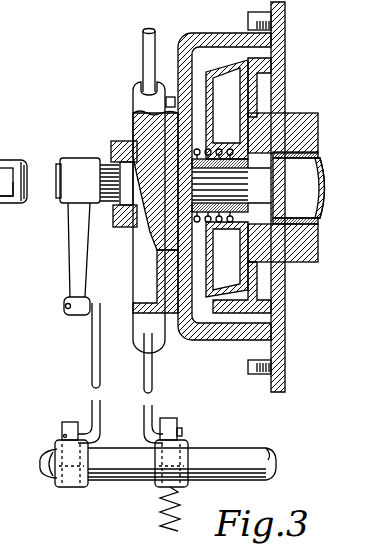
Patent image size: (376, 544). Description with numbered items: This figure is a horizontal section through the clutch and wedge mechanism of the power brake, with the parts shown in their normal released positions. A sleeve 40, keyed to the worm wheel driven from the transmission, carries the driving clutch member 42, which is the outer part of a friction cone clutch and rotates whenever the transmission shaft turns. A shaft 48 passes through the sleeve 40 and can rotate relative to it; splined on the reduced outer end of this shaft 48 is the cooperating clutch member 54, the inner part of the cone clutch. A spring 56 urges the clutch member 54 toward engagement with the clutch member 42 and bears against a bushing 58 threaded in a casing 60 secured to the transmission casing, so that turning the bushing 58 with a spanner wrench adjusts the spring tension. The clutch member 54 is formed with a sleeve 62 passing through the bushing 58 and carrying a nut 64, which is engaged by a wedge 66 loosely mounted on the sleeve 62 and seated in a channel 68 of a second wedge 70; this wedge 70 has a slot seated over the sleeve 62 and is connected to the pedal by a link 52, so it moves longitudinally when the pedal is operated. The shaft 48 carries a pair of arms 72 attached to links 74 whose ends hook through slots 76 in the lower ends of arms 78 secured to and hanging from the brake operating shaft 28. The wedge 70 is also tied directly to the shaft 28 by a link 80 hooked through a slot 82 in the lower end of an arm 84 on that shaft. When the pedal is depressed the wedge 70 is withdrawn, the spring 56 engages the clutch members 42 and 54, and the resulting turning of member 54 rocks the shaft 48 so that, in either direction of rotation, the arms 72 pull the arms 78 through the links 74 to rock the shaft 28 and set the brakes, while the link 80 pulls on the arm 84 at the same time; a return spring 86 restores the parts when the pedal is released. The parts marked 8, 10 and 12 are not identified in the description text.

The support member 8 is at (13, 162).
The housing 10 is at (290, 304).
The shaft 12 is at (6, 200).
The brake operating shaft 28 is at (132, 467).
The sleeve 40 is at (305, 262).
The driving clutch member 42 is at (260, 76).
The shaft 48 is at (300, 162).
The link 52 is at (143, 48).
The cooperating clutch member 54 is at (219, 98).
The spring 56 is at (225, 224).
The bushing 58 is at (163, 230).
The casing 60 is at (215, 340).
The sleeve 62 is at (173, 157).
The nut 64 is at (130, 230).
The wedge 66 is at (113, 153).
The channel 68 is at (152, 285).
The wedge 70 is at (123, 213).
The arms 72 is at (82, 230).
The links 74 is at (98, 413).
The slots 76 is at (70, 458).
The arms 78 is at (77, 430).
The link 80 is at (147, 418).
The slot 82 is at (198, 485).
The arm 84 is at (178, 420).
The return spring 86 is at (160, 517).